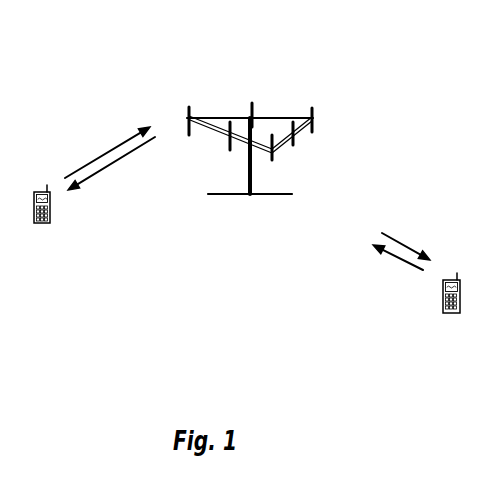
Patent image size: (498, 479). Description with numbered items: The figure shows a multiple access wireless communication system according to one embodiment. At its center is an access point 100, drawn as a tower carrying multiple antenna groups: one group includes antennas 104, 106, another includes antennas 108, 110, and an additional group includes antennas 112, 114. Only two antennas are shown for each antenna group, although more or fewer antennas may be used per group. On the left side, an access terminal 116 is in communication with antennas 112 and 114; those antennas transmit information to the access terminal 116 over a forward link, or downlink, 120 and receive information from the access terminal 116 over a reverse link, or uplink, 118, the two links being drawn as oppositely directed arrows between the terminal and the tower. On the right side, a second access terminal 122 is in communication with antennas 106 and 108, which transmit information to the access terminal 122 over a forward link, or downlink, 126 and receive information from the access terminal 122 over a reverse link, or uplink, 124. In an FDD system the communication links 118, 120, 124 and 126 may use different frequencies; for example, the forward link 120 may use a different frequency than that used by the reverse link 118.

The access point 100 is at (236, 194).
The antenna 104 is at (272, 160).
The antenna 106 is at (293, 145).
The antenna 108 is at (312, 132).
The antenna 110 is at (252, 104).
The antenna 112 is at (189, 117).
The antenna 114 is at (230, 150).
The access terminal 116 is at (44, 187).
The reverse link 118 is at (110, 155).
The forward link 120 is at (117, 158).
The access terminal 122 is at (452, 273).
The reverse link 124 is at (397, 257).
The forward link 126 is at (408, 247).